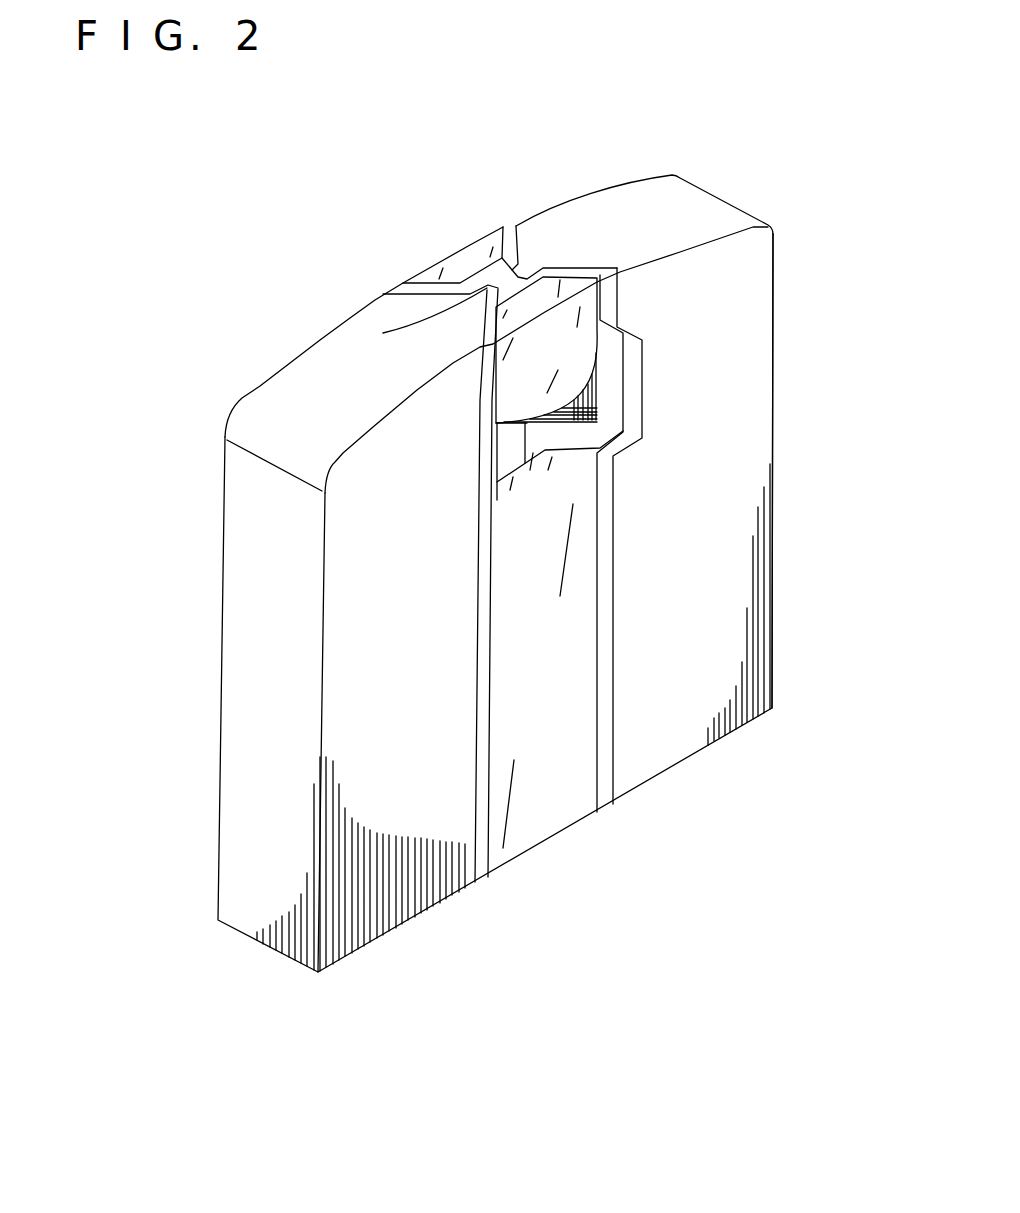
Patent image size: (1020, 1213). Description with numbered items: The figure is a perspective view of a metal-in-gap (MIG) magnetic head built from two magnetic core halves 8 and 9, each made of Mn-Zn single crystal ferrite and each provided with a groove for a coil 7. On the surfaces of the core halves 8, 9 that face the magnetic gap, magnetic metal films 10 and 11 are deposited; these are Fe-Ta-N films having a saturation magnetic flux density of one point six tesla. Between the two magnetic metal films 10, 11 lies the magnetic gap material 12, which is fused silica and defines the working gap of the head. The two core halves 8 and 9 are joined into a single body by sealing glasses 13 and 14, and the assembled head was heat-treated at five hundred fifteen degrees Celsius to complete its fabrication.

The groove for a coil 7 is at (613, 393).
The magnetic core half 8 is at (264, 680).
The magnetic core half 9 is at (687, 668).
The magnetic metal film 10 is at (477, 848).
The magnetic metal film 11 is at (505, 232).
The magnetic gap material 12 is at (400, 332).
The sealing glass 13 is at (557, 337).
The sealing glass 14 is at (556, 782).